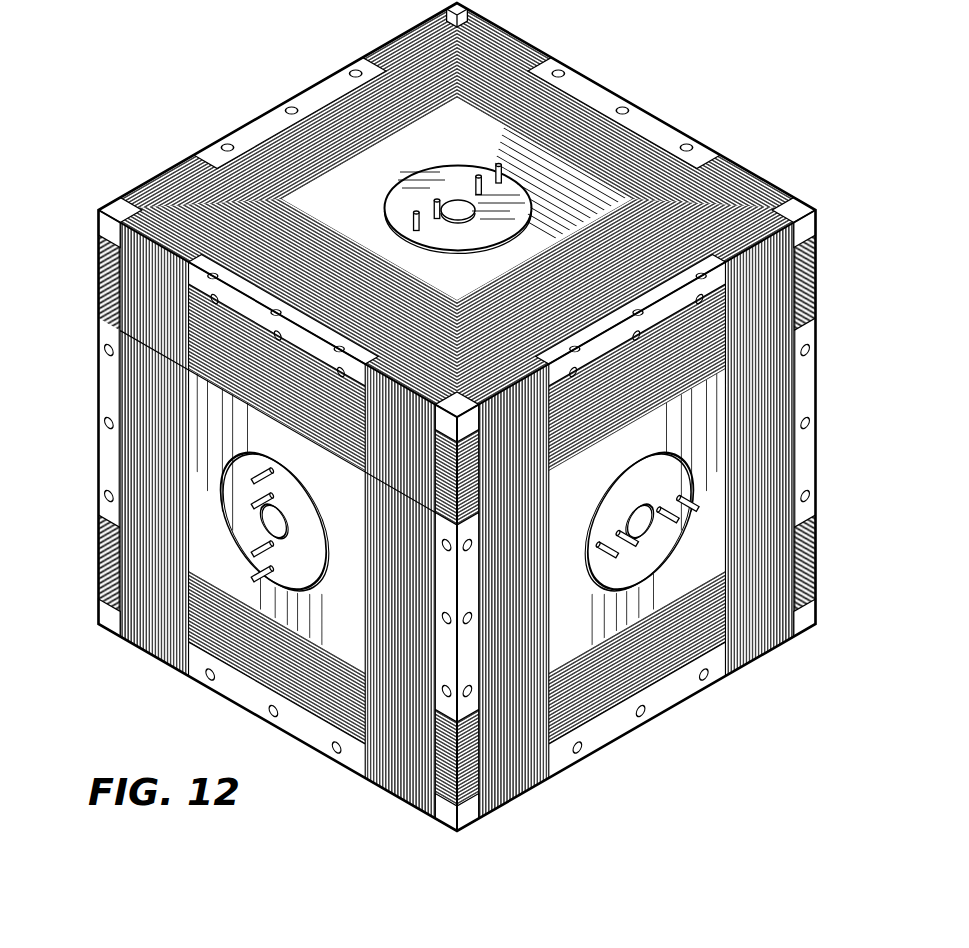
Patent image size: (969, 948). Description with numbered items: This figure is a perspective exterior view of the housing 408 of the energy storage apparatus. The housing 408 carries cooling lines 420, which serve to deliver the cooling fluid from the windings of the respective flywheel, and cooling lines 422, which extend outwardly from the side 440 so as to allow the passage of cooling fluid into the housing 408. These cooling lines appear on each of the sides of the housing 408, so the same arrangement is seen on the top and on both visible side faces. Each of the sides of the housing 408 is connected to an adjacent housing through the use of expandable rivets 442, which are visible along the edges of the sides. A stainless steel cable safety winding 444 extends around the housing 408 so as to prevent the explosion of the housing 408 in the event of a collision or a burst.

The housing 408 is at (661, 110).
The cooling lines 420 is at (496, 165).
The cooling lines 422 is at (431, 203).
The side 440 is at (574, 85).
The expandable rivets 442 is at (288, 106).
The stainless steel cable safety winding 444 is at (157, 644).